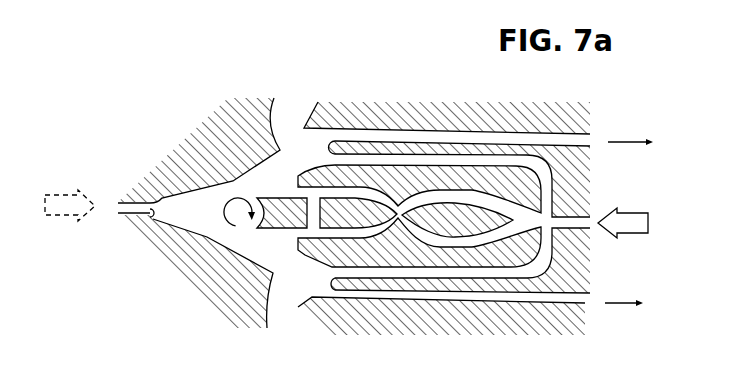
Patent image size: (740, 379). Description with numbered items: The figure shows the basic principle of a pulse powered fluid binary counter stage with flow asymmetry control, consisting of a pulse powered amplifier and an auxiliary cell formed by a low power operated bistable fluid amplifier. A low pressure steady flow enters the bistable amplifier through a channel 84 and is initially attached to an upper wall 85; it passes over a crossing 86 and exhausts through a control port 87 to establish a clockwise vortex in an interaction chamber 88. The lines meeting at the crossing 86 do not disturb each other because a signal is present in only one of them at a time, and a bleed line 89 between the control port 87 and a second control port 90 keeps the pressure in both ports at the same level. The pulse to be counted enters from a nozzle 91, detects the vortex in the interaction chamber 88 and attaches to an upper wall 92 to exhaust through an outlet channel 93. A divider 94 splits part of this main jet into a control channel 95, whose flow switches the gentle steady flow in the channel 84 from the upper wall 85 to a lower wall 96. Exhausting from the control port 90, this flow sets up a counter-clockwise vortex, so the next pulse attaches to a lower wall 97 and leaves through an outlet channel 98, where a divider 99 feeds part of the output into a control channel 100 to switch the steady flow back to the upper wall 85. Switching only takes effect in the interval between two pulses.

The channel 84 is at (588, 220).
The upper wall 85 is at (503, 205).
The crossing 86 is at (396, 224).
The control port 87 is at (293, 234).
The interaction chamber 88 is at (204, 220).
The bleed line 89 is at (313, 214).
The control port 90 is at (299, 186).
The nozzle 91 is at (151, 220).
The upper wall 92 is at (188, 181).
The outlet channel 93 is at (590, 135).
The divider 94 is at (328, 145).
The control channel 95 is at (340, 157).
The lower wall 96 is at (522, 238).
The lower wall 97 is at (205, 237).
The outlet channel 98 is at (588, 303).
The divider 99 is at (328, 280).
The control channel 100 is at (367, 268).